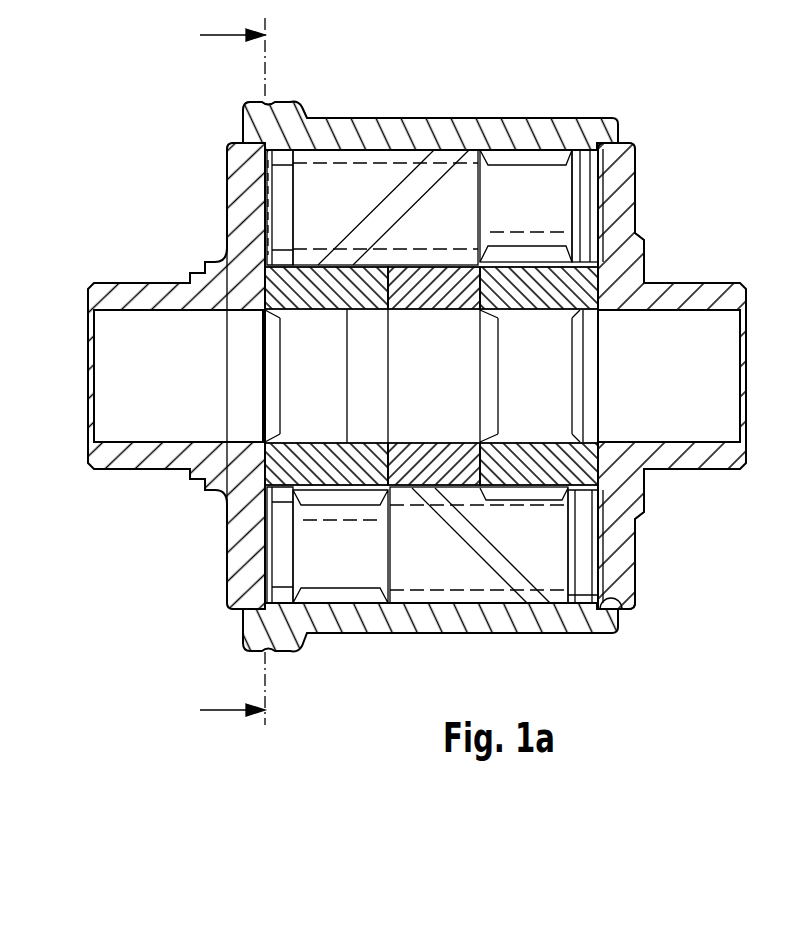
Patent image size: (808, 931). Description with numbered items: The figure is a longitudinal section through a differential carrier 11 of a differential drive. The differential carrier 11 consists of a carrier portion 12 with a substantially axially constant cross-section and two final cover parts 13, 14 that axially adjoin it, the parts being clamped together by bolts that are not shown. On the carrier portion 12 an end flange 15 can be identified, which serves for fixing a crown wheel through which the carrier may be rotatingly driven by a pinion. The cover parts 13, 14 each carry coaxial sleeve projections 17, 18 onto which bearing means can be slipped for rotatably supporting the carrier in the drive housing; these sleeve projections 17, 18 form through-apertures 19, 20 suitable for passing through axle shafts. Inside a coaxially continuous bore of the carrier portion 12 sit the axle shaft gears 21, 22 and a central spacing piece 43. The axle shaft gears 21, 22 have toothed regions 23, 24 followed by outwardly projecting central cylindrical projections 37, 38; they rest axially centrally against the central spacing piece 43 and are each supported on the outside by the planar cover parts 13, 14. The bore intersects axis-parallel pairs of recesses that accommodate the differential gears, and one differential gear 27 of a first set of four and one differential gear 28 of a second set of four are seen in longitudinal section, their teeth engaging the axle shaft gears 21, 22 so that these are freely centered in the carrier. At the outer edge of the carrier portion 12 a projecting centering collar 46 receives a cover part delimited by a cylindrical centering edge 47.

The differential carrier 11 is at (430, 345).
The carrier portion 12 is at (520, 133).
The cover part 13 is at (225, 253).
The cover part 14 is at (637, 276).
The end flange 15 is at (263, 120).
The sleeve projection 17 is at (176, 376).
The sleeve projection 18 is at (674, 420).
The through-aperture 19 is at (122, 432).
The through-aperture 20 is at (684, 434).
The axle shaft gear 21 is at (340, 475).
The axle shaft gear 22 is at (527, 470).
The toothed region 23 is at (326, 252).
The toothed region 24 is at (527, 258).
The differential gear 27 is at (365, 170).
The differential gear 28 is at (418, 578).
The central cylindrical projection 37 is at (283, 255).
The central cylindrical projection 38 is at (598, 220).
The central spacing piece 43 is at (453, 470).
The centering collar 46 is at (611, 598).
The centering edge 47 is at (626, 611).